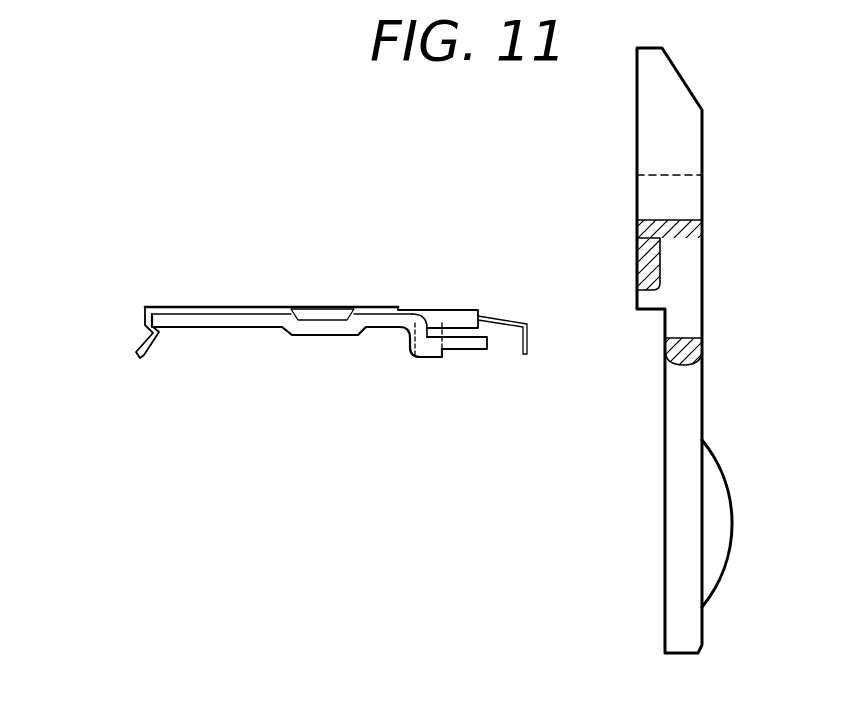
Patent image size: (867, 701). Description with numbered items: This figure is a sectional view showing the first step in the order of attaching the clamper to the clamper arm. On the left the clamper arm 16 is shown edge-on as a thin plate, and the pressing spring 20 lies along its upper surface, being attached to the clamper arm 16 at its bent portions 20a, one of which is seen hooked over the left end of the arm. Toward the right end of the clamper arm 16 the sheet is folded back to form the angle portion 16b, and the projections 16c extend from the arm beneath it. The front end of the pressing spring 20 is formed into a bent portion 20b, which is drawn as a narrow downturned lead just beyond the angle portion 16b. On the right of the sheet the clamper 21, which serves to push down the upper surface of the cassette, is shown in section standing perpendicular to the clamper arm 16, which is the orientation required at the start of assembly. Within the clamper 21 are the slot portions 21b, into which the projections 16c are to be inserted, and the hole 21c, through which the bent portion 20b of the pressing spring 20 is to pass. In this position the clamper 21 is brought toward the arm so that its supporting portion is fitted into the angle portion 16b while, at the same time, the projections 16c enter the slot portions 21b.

The clamper arm 16 is at (260, 322).
The angle portion 16b is at (436, 334).
The projections 16c is at (470, 346).
The pressing spring 20 is at (303, 305).
The bent portions 20a is at (138, 343).
The bent portion 20b is at (529, 345).
The clamper 21 is at (692, 123).
The slot portions 21b is at (675, 303).
The hole 21c is at (683, 200).